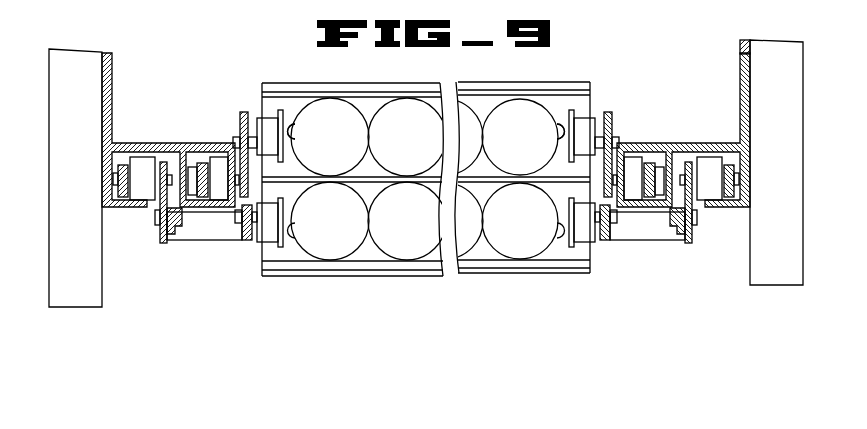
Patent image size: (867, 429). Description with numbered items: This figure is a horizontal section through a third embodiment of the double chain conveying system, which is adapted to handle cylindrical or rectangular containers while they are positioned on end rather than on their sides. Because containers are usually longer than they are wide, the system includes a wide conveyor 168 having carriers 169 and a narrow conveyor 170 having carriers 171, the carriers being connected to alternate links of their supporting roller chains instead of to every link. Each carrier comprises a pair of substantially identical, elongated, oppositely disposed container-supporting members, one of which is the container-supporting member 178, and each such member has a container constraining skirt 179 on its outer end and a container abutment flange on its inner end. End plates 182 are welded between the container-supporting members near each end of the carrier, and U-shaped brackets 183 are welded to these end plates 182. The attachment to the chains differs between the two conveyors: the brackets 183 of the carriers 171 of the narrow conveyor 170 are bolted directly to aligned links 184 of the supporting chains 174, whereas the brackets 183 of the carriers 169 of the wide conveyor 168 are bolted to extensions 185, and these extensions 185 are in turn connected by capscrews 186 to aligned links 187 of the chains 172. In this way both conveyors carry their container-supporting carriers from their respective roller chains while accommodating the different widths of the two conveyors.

The wide conveyor 168 is at (305, 276).
The carriers 169 is at (522, 278).
The narrow conveyor 170 is at (562, 80).
The carriers 171 is at (306, 80).
The chains 172 is at (112, 167).
The supporting chains 174 is at (197, 167).
The container-supporting member 178 is at (368, 105).
The container constraining skirt 179 is at (486, 83).
The end plates 182 is at (281, 200).
The U-shaped brackets 183 is at (263, 124).
The aligned links 184 is at (240, 128).
The extensions 185 is at (210, 230).
The capscrews 186 is at (157, 217).
The aligned links 187 is at (167, 243).